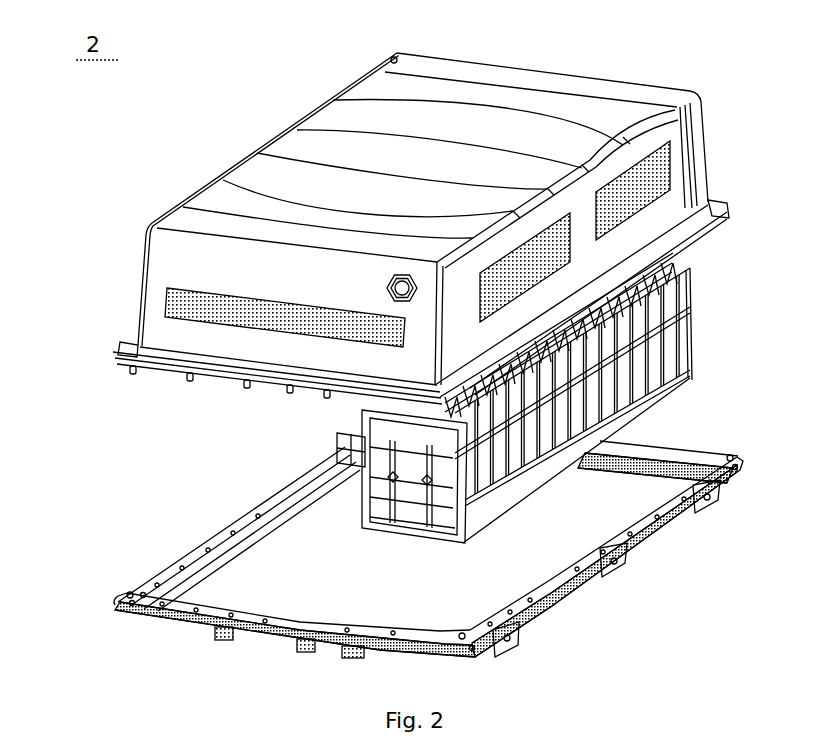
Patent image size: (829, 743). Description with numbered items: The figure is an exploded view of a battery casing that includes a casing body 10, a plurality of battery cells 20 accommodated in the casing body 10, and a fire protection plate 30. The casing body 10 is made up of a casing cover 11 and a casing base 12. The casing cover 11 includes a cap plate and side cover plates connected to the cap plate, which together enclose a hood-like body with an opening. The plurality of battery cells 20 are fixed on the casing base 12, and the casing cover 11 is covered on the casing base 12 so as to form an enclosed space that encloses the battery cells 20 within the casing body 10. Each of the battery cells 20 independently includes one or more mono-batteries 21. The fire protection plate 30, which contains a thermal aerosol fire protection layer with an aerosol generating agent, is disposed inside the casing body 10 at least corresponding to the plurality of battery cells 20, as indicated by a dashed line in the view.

The casing body 10 is at (379, 435).
The casing cover 11 is at (200, 337).
The casing base 12 is at (230, 567).
The battery cells 20 is at (660, 345).
The mono-battery 21 is at (685, 378).
The fire protection plate 30 is at (665, 176).